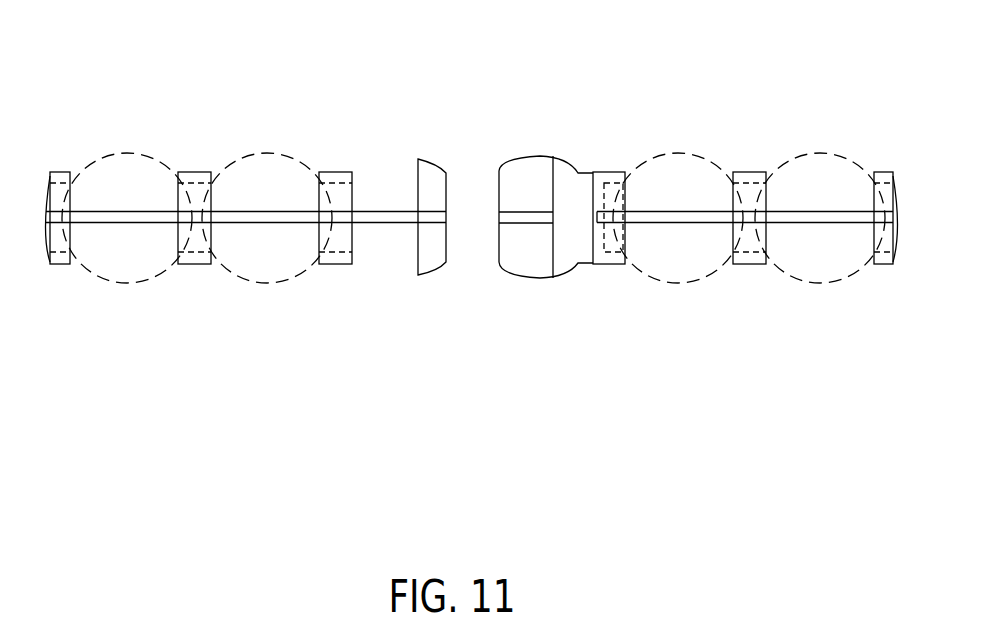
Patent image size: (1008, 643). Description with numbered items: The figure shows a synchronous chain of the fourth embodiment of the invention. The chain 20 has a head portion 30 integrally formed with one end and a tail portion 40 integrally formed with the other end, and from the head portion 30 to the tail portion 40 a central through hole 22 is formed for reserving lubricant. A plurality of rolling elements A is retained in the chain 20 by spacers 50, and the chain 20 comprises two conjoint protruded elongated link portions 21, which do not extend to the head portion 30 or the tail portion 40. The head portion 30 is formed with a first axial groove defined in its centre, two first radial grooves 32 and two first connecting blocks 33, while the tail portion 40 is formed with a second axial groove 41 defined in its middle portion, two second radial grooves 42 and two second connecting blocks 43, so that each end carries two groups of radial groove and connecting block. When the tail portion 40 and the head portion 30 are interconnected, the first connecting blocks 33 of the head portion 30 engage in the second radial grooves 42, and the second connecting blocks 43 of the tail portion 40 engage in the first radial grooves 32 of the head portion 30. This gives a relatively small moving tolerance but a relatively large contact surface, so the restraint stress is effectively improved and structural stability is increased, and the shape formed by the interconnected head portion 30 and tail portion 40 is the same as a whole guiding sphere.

The chain 20 is at (745, 303).
The protruded elongated link portions 21 is at (815, 217).
The central through hole 22 is at (333, 250).
The head portion 30 is at (265, 286).
The first radial grooves 32 is at (375, 240).
The first connecting blocks 33 is at (451, 265).
The tail portion 40 is at (538, 190).
The second axial groove 41 is at (522, 221).
The second radial grooves 42 is at (573, 238).
The second connecting blocks 43 is at (533, 247).
The spacers 50 is at (767, 259).
The rolling elements A is at (693, 253).